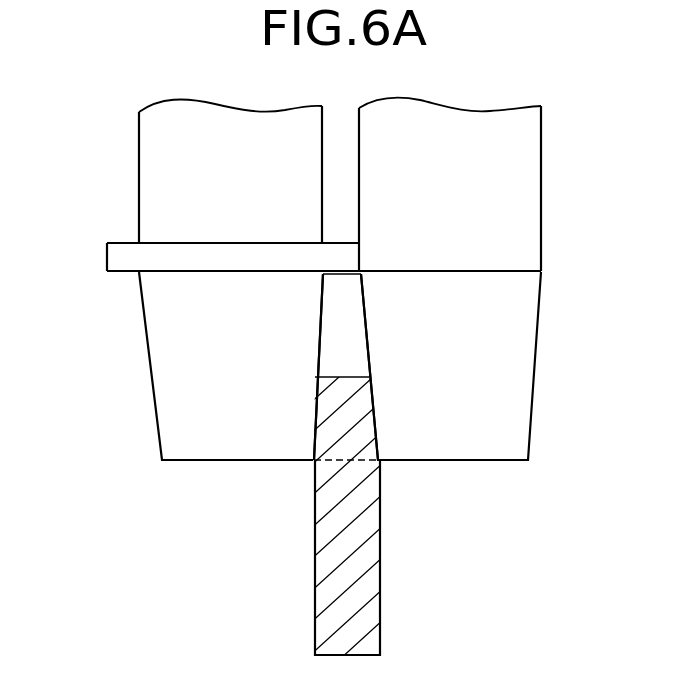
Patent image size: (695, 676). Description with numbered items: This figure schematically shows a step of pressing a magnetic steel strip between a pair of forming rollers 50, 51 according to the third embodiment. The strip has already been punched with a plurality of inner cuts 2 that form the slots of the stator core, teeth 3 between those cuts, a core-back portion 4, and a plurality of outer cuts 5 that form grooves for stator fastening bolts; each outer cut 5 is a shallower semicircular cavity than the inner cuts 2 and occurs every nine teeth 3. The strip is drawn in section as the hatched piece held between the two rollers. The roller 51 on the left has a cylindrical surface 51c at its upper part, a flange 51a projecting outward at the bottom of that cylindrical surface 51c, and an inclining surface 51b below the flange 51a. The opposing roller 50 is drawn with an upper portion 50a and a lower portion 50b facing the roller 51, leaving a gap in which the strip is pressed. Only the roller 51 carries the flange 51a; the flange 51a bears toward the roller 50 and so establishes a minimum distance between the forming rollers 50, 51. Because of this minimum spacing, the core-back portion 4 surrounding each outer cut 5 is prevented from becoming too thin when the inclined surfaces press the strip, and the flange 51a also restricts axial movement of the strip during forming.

The inner cut 2 is at (333, 571).
The tooth 3 is at (328, 633).
The core-back portion 4 is at (335, 437).
The outer cut 5 is at (316, 376).
The forming roller 50 is at (508, 279).
The upper portion of second chuck 50a is at (527, 152).
The lower portion of second chuck 50b is at (522, 381).
The forming roller 51 is at (185, 279).
The flange 51a is at (117, 260).
The inclining surface 51b is at (160, 383).
The cylindrical surface 51c is at (150, 149).